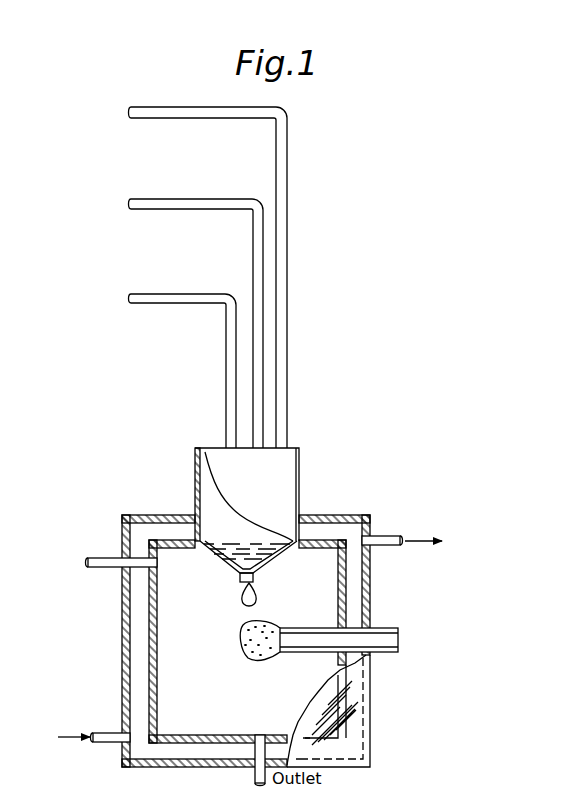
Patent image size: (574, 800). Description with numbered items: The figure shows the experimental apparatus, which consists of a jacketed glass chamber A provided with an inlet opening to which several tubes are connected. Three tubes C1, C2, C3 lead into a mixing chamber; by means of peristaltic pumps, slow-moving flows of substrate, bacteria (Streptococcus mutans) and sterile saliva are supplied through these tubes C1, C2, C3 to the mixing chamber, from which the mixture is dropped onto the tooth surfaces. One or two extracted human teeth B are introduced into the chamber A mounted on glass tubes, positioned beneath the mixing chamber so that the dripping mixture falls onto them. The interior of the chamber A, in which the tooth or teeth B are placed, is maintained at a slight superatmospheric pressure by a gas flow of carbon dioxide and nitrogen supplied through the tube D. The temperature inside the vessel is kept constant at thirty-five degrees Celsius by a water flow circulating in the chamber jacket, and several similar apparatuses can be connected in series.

The tube C1 is at (195, 111).
The tube C2 is at (199, 205).
The tube C3 is at (198, 299).
The jacketed glass chamber A is at (118, 540).
The extracted human tooth mounted on glass tube B is at (237, 652).
The tube D is at (111, 564).